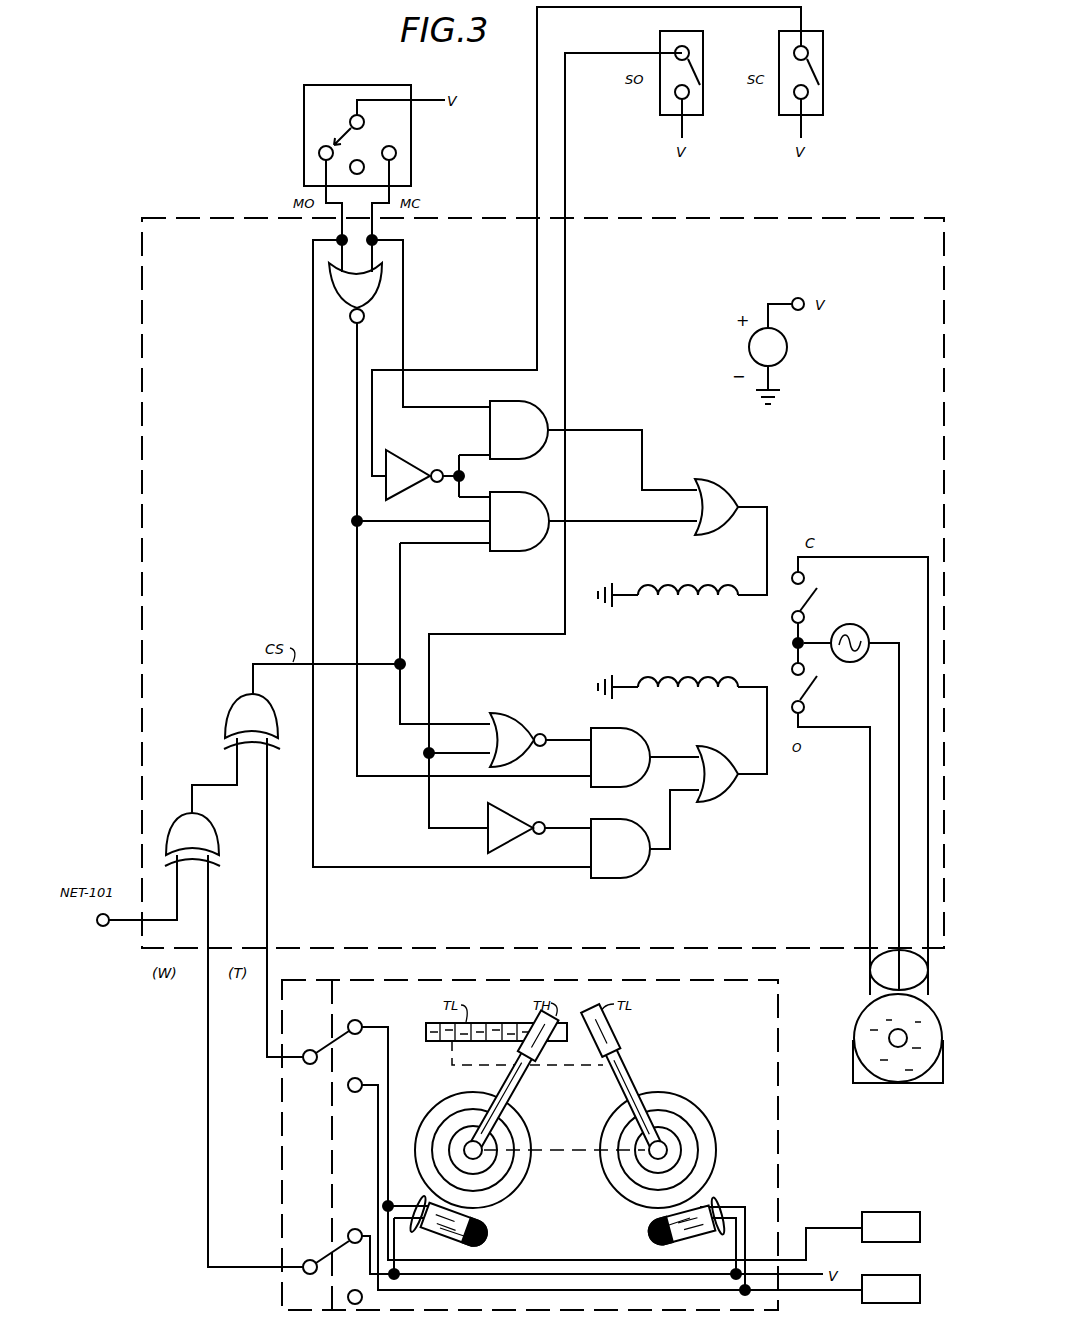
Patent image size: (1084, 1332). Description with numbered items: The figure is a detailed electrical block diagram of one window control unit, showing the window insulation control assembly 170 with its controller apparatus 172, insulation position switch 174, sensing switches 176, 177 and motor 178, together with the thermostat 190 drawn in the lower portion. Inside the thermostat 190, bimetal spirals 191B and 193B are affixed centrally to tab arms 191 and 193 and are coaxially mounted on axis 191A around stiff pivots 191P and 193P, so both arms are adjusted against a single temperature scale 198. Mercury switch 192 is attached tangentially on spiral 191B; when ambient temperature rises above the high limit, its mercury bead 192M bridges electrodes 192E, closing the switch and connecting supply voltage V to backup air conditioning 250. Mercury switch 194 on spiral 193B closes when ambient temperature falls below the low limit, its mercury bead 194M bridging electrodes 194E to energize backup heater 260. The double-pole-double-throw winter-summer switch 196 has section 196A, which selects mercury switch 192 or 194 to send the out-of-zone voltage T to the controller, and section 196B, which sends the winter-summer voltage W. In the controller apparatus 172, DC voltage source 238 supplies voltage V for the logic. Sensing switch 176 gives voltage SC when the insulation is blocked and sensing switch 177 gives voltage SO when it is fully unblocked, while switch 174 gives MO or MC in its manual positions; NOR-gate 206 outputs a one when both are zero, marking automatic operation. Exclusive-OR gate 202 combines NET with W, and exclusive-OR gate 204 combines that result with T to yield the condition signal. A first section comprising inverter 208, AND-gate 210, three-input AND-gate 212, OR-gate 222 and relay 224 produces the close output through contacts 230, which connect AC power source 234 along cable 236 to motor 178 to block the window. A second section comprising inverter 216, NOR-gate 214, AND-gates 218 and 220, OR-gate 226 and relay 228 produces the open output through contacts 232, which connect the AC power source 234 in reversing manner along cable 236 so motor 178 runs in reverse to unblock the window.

The window insulation control assembly 170 is at (322, 54).
The controller apparatus 172 is at (841, 210).
The insulation position switch 174 is at (303, 89).
The sensing switch 176 is at (824, 57).
The sensing switch 177 is at (704, 55).
The motor 178 is at (862, 1048).
The thermostat 190 is at (282, 1122).
The tab arm 191 is at (519, 1084).
The axis 191A is at (542, 1153).
The bimetal spiral 191B is at (530, 1132).
The stiff pivot 191P is at (468, 1145).
The mercury switch 192 is at (470, 1219).
The electrodes 192E is at (418, 1190).
The mercury bead 192M is at (483, 1223).
The tab arm 193 is at (613, 1056).
The bimetal spiral 193B is at (650, 1092).
The stiff pivot 193P is at (670, 1147).
The mercury switch 194 is at (677, 1212).
The electrodes 194E is at (715, 1196).
The mercury bead 194M is at (652, 1222).
The winter-summer switch 196 is at (331, 1146).
The section of winter-summer switch 196A is at (332, 1043).
The section of winter-summer switch 196B is at (336, 1251).
The temperature scale 198 is at (565, 1030).
The exclusive-OR gate 202 is at (208, 828).
The exclusive-OR gate 204 is at (232, 703).
The NOR-gate 206 is at (330, 283).
The inverter 208 is at (394, 458).
The AND-gate 210 is at (506, 400).
The three-input AND-gate 212 is at (500, 494).
The NOR-gate 214 is at (500, 713).
The inverter 216 is at (501, 807).
The AND-gate 218 is at (613, 729).
The AND-gate 220 is at (606, 820).
The OR-gate 222 is at (714, 482).
The relay 224 is at (653, 583).
The OR-gate 226 is at (715, 800).
The relay 228 is at (653, 675).
The contacts 230 is at (816, 597).
The contacts 232 is at (818, 690).
The AC power source 234 is at (849, 626).
The cable 236 is at (868, 972).
The DC voltage source 238 is at (787, 343).
The backup air conditioning 250 is at (880, 1212).
The backup heater 260 is at (883, 1275).